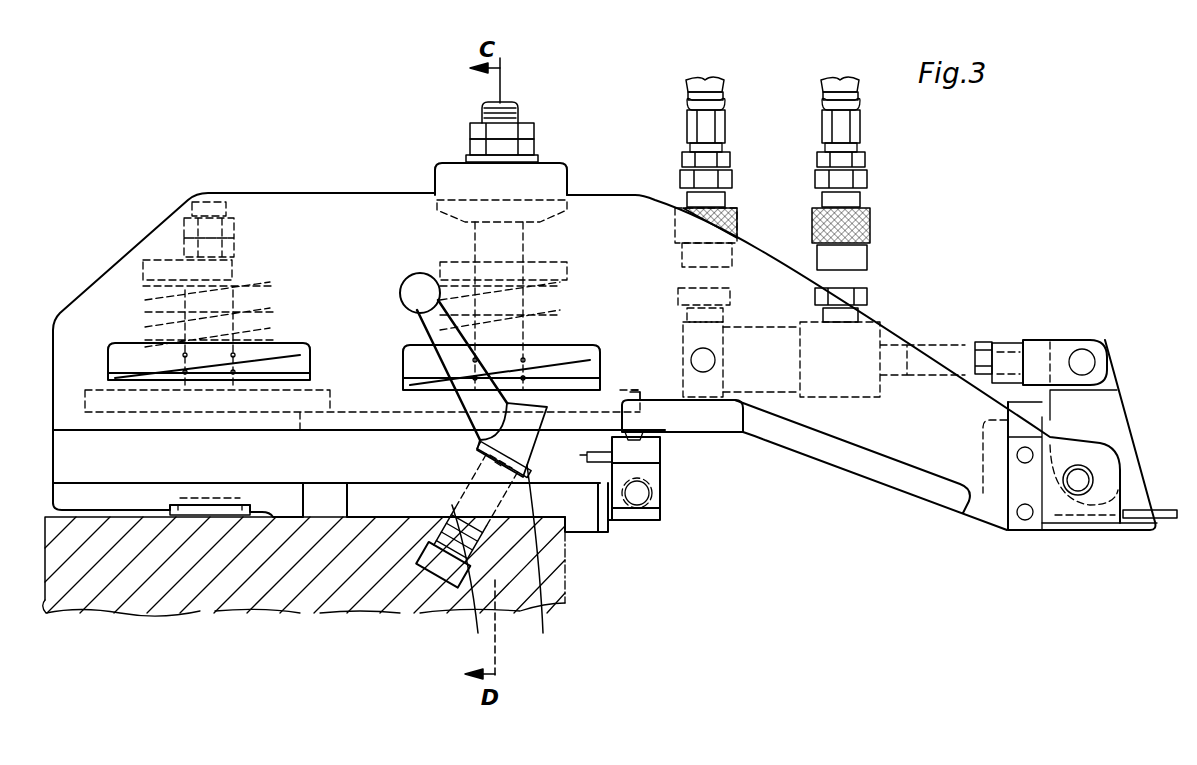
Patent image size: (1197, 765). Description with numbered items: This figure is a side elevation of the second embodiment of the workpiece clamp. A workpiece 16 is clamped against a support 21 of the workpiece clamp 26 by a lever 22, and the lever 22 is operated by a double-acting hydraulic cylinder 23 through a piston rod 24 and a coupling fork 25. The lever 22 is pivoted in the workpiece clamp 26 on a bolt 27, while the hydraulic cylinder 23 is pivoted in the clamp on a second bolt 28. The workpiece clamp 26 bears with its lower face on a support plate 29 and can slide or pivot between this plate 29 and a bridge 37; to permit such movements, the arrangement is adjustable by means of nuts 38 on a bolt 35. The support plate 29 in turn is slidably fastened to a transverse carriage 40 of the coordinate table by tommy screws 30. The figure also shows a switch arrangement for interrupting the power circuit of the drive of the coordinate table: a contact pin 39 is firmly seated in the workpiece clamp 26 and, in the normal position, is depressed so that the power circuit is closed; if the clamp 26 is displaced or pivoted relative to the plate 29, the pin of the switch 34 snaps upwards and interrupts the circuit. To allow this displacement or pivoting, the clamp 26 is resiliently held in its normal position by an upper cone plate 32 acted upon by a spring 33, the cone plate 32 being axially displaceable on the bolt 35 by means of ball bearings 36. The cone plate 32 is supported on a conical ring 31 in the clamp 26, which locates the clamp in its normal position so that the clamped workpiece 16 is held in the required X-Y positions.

The workpiece 16 is at (1163, 512).
The support 21 is at (1133, 527).
The lever 22 is at (1113, 415).
The double-acting hydraulic cylinder 23 is at (873, 335).
The piston rod 24 is at (958, 350).
The coupling fork 25 is at (1045, 347).
The workpiece clamp 26 is at (758, 310).
The bolt 27 is at (707, 368).
The bolt 28 is at (1075, 483).
The support plate 29 is at (145, 467).
The tommy screws 30 is at (489, 550).
The conical ring 31 is at (383, 410).
The upper cone plate 32 is at (403, 367).
The spring 33 is at (262, 287).
The switch 34 is at (640, 500).
The bolt 35 is at (220, 467).
The ball bearings 36 is at (527, 297).
The bridge 37 is at (440, 174).
The nuts 38 is at (477, 145).
The contact pin 39 is at (637, 417).
The transverse carriage 40 is at (557, 568).